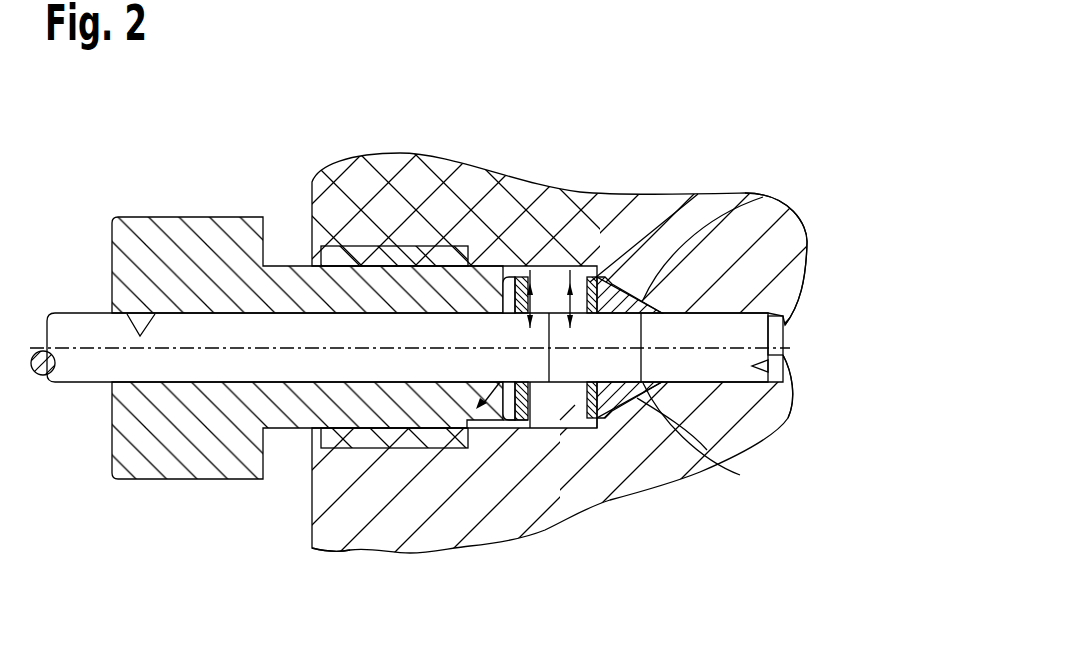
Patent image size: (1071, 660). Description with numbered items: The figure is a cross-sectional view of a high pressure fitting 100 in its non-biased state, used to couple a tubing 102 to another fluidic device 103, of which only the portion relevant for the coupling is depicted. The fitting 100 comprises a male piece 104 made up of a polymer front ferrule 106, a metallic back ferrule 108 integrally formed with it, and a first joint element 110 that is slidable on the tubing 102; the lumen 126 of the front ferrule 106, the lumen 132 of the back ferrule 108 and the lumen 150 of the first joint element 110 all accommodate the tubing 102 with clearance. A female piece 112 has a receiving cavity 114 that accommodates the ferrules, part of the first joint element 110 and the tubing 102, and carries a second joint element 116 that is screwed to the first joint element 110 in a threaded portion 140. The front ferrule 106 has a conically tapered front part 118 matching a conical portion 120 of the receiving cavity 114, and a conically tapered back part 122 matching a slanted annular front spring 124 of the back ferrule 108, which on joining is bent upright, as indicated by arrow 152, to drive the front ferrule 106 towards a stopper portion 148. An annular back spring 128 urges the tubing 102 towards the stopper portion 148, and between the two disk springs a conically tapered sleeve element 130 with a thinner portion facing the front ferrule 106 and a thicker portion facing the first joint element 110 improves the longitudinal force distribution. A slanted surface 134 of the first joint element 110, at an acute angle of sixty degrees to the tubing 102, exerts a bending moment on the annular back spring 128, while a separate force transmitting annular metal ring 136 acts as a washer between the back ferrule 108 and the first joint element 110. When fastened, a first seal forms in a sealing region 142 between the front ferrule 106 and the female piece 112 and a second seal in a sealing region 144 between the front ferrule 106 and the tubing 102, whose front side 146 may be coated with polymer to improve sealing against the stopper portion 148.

The fitting 100 is at (816, 190).
The tubing 102 is at (68, 384).
The fluidic device 103 is at (330, 517).
The male piece 104 is at (549, 382).
The front ferrule 106 is at (620, 283).
The back ferrule 108 is at (524, 278).
The first joint element 110 is at (347, 285).
The female piece 112 is at (733, 440).
The receiving cavity 114 is at (506, 278).
The second joint element 116 is at (362, 240).
The conically tapered front part 118 is at (715, 225).
The conical portion 120 is at (755, 290).
The conically tapered back part 122 is at (585, 280).
The slanted annular front spring 124 is at (560, 278).
The lumen of the front ferrule 126 is at (625, 388).
The annular back spring 128 is at (505, 425).
The sleeve element 130 is at (560, 433).
The lumen of the back ferrule 132 is at (537, 428).
The slanted surface 134 is at (400, 256).
The force transmitting annular metal ring 136 is at (440, 449).
The threaded portion 140 is at (332, 250).
The sealing region 142 is at (655, 268).
The sealing region 144 is at (790, 375).
The front side of the tubing 146 is at (783, 320).
The stopper portion 148 is at (762, 368).
The lumen of the first joint element 150 is at (137, 326).
The arrow 152 is at (572, 408).